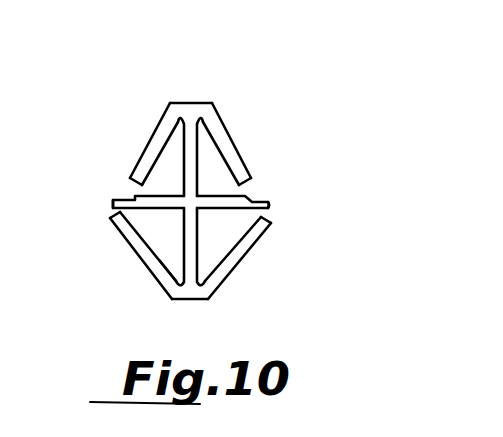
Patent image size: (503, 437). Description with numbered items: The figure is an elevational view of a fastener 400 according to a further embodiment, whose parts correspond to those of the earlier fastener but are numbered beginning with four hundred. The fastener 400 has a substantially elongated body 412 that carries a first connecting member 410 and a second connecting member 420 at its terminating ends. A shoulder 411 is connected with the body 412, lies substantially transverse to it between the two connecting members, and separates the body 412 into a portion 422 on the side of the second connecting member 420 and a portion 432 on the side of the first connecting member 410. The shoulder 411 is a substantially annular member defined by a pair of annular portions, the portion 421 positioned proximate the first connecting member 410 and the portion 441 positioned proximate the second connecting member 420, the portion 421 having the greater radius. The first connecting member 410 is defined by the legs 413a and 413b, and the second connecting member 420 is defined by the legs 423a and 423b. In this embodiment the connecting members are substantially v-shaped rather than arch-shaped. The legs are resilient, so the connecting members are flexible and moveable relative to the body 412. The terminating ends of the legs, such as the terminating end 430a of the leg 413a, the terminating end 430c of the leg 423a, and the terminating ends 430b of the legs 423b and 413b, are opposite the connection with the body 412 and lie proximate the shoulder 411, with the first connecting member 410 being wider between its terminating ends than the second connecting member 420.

The fastener 400 is at (158, 93).
The second connecting member 420 is at (215, 105).
The leg 423a is at (155, 133).
The leg 423b is at (223, 122).
The portion of body 422 is at (200, 162).
The terminating end 430c is at (130, 187).
The terminating end 430b is at (247, 183).
The annular portion 441 is at (250, 202).
The shoulder 411 is at (113, 201).
The annular portion 421 is at (268, 208).
The portion of body 432 is at (198, 255).
The leg 413a is at (135, 252).
The terminating end 430a is at (107, 217).
The leg 413b is at (229, 278).
The first connecting member 410 is at (211, 303).
The body 412 is at (178, 265).